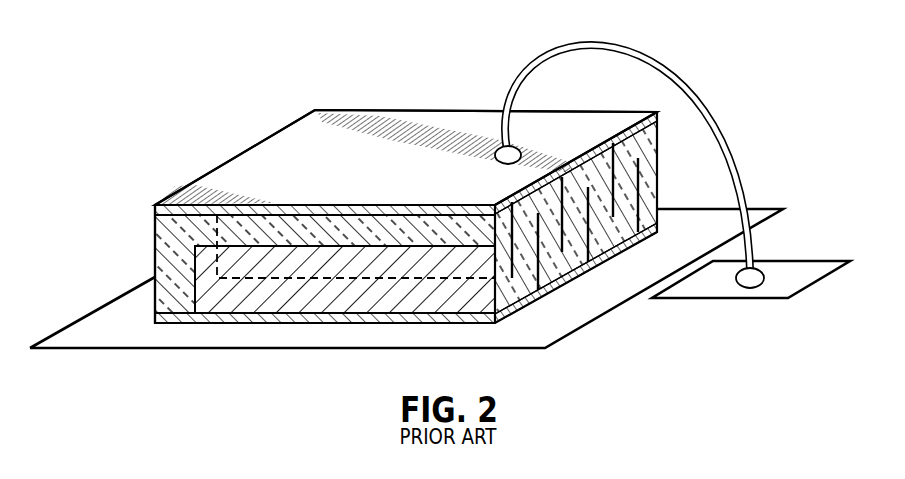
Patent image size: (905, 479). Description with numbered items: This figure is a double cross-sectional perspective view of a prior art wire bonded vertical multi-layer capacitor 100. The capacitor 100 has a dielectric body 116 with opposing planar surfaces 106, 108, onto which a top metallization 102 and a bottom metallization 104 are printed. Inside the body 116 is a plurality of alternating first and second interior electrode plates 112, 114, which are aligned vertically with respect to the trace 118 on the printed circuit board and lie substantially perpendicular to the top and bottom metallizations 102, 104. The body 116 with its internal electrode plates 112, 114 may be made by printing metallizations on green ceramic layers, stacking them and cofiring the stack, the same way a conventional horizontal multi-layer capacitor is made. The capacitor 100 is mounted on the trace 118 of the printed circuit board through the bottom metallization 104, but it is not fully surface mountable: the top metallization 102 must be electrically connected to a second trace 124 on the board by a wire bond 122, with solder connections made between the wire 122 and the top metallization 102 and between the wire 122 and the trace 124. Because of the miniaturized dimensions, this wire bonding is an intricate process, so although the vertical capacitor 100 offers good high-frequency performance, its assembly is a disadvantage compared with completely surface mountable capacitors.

The vertical multi-layer capacitor 100 is at (241, 36).
The top metallization 102 is at (425, 110).
The bottom metallization 104 is at (229, 323).
The planar surface 106 is at (313, 205).
The planar surface 108 is at (297, 315).
The first interior electrode plate 112 is at (351, 297).
The second interior electrode plate 114 is at (437, 278).
The dielectric body 116 is at (155, 239).
The trace 118 is at (73, 326).
The wire bond 122 is at (645, 44).
The second trace 124 is at (812, 262).